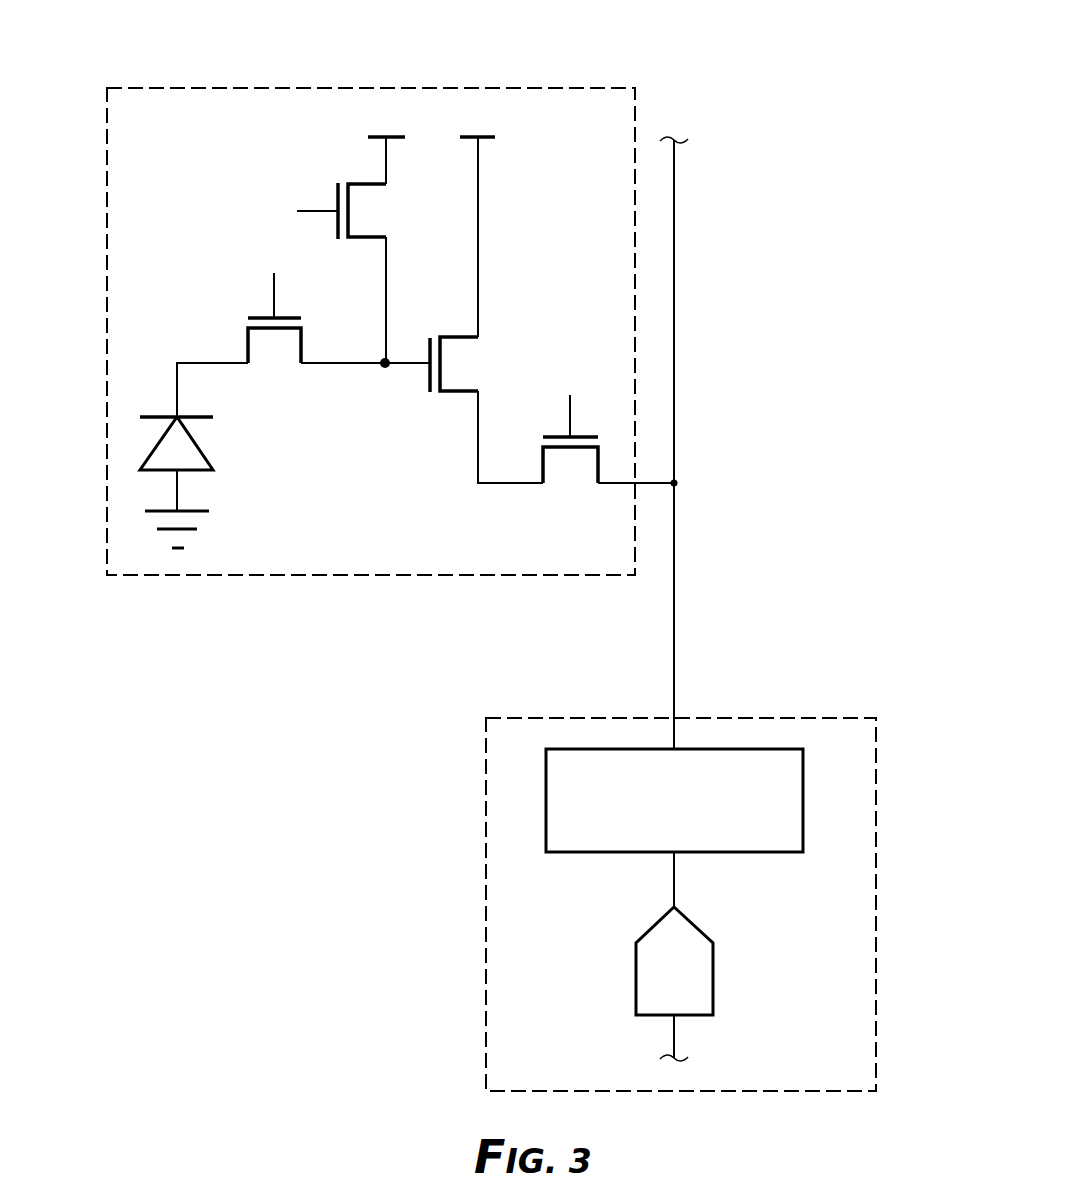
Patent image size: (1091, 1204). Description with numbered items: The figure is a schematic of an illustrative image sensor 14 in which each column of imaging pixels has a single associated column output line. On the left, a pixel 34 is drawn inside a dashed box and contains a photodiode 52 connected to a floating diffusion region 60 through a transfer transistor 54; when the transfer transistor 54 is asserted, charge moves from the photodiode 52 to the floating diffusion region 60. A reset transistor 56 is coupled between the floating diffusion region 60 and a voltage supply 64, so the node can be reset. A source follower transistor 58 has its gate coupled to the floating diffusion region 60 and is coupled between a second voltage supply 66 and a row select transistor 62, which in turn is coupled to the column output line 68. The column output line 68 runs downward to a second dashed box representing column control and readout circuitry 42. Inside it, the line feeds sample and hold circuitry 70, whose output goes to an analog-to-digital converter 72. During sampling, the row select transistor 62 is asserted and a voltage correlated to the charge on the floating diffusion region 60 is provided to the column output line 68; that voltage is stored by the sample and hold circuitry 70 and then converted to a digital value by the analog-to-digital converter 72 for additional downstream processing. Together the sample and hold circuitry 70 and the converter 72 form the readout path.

The image sensor 14 is at (867, 87).
The pixel 34 is at (106, 134).
The column control and readout circuitry 42 is at (877, 762).
The photodiode 52 is at (220, 461).
The transfer transistor 54 is at (273, 364).
The reset transistor 56 is at (388, 210).
The source follower transistor 58 is at (439, 404).
The floating diffusion region 60 is at (382, 360).
The row select transistor 62 is at (566, 485).
The voltage supply 64 is at (372, 138).
The voltage supply 66 is at (487, 141).
The column output line 68 is at (674, 257).
The sample and hold circuitry 70 is at (740, 852).
The analog-to-digital converter 72 is at (714, 972).